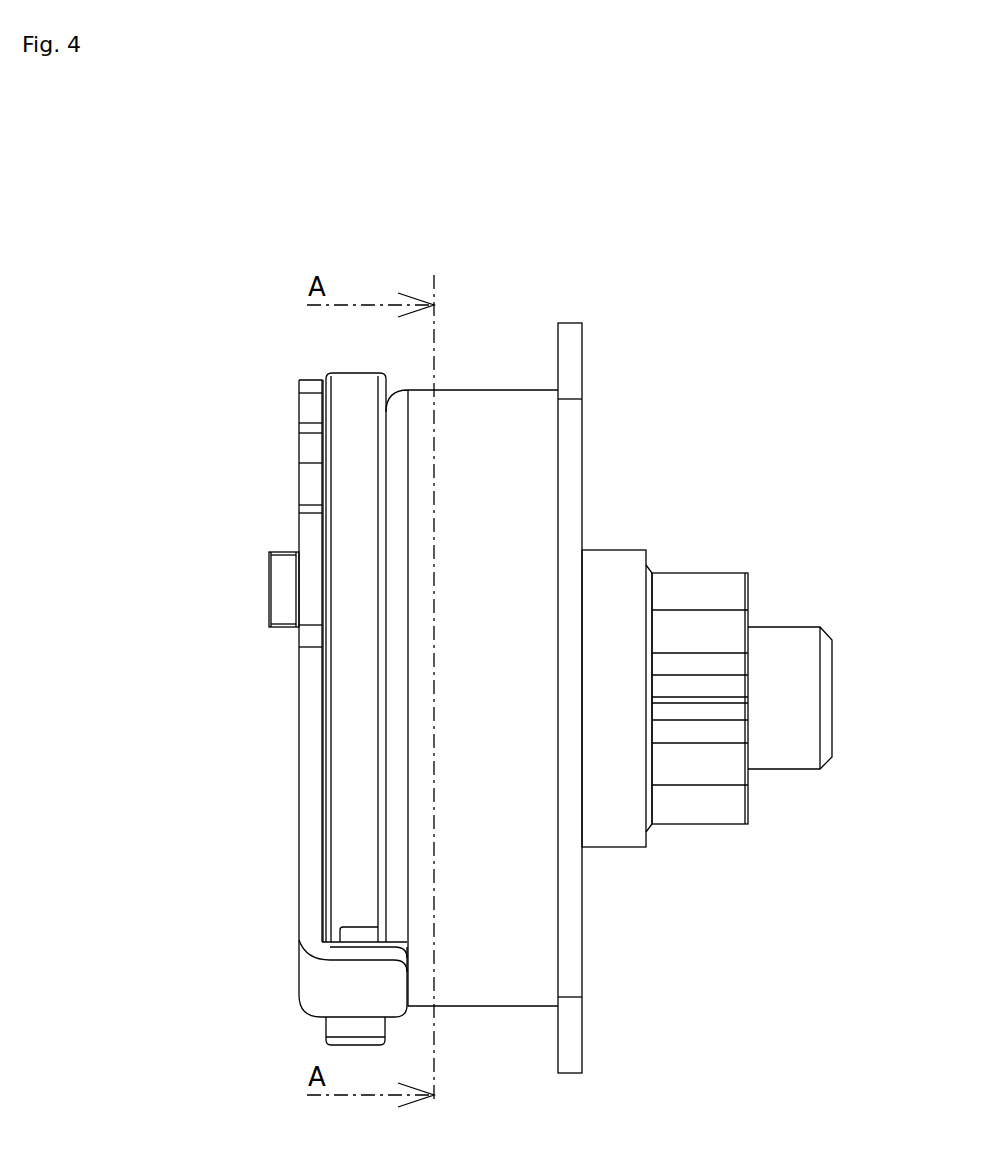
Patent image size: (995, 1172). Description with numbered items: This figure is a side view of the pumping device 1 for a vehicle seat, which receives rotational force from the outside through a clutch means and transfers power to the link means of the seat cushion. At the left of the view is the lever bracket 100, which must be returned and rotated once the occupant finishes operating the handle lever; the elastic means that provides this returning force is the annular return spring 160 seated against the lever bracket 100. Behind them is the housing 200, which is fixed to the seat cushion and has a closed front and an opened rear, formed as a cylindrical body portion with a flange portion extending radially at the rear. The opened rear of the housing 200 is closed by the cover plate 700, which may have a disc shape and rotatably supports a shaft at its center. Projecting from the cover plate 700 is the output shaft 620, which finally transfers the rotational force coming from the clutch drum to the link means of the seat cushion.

The pumping device 1 is at (697, 157).
The lever bracket 100 is at (280, 773).
The annular return spring 160 is at (350, 368).
The housing 200 is at (487, 385).
The output shaft 620 is at (694, 553).
The cover plate 700 is at (592, 925).